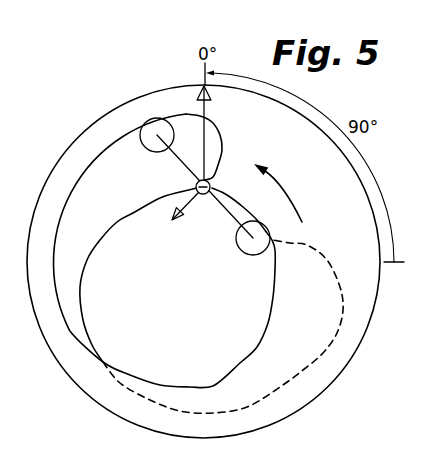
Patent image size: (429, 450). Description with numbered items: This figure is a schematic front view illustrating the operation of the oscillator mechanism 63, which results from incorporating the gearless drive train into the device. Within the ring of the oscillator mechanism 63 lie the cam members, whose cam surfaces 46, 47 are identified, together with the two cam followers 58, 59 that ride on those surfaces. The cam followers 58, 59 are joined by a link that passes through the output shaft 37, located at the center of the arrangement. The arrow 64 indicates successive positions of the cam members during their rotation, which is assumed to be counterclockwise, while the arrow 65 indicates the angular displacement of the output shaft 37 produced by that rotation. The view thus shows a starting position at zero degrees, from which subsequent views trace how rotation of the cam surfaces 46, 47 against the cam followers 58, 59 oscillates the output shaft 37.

The output shaft 37 is at (197, 187).
The cam surface 46 is at (254, 348).
The cam surface 47 is at (87, 252).
The cam follower 58 is at (152, 152).
The cam follower 59 is at (241, 252).
The oscillator mechanism 63 is at (108, 108).
The arrow 64 is at (206, 108).
The arrow 65 is at (190, 201).